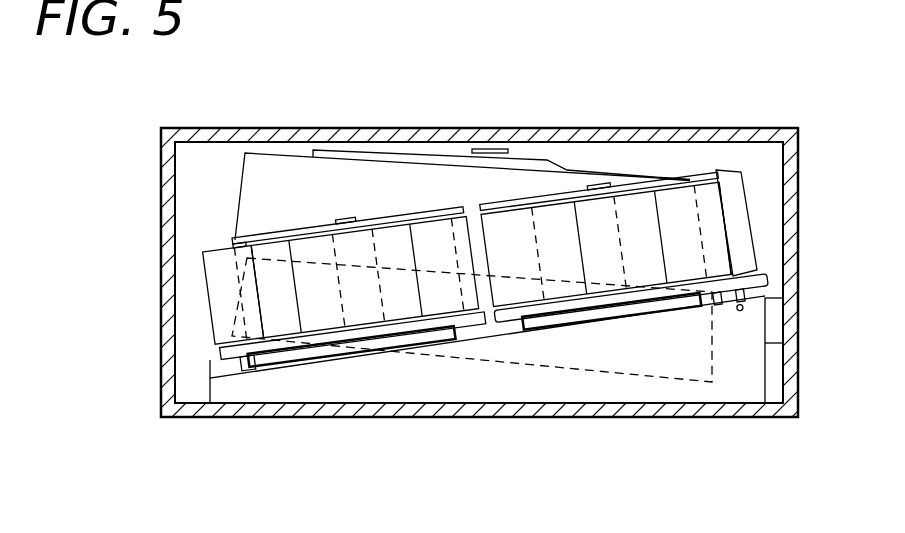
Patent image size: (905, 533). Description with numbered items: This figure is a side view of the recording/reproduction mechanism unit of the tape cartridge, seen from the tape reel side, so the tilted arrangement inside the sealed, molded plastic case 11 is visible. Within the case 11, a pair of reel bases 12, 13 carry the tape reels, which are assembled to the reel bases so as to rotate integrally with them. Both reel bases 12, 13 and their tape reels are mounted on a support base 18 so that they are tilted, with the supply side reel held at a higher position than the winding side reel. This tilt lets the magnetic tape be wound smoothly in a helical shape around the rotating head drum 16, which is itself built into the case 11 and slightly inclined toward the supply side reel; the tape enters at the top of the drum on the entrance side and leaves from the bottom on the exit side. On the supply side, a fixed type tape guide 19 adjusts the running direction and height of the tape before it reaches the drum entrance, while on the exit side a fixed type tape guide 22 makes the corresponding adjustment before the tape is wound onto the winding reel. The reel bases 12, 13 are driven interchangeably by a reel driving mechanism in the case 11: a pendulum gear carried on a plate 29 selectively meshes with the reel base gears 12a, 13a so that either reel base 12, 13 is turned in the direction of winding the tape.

The case 11 is at (649, 128).
The reel base 12 is at (648, 295).
The reel base gear 12a is at (599, 312).
The reel base 13 is at (390, 332).
The reel base gear 13a is at (367, 347).
The rotating head drum 16 is at (325, 172).
The support base 18 is at (772, 343).
The tape guide 19 is at (750, 217).
The tape guide 22 is at (216, 285).
The plate 29 is at (452, 160).